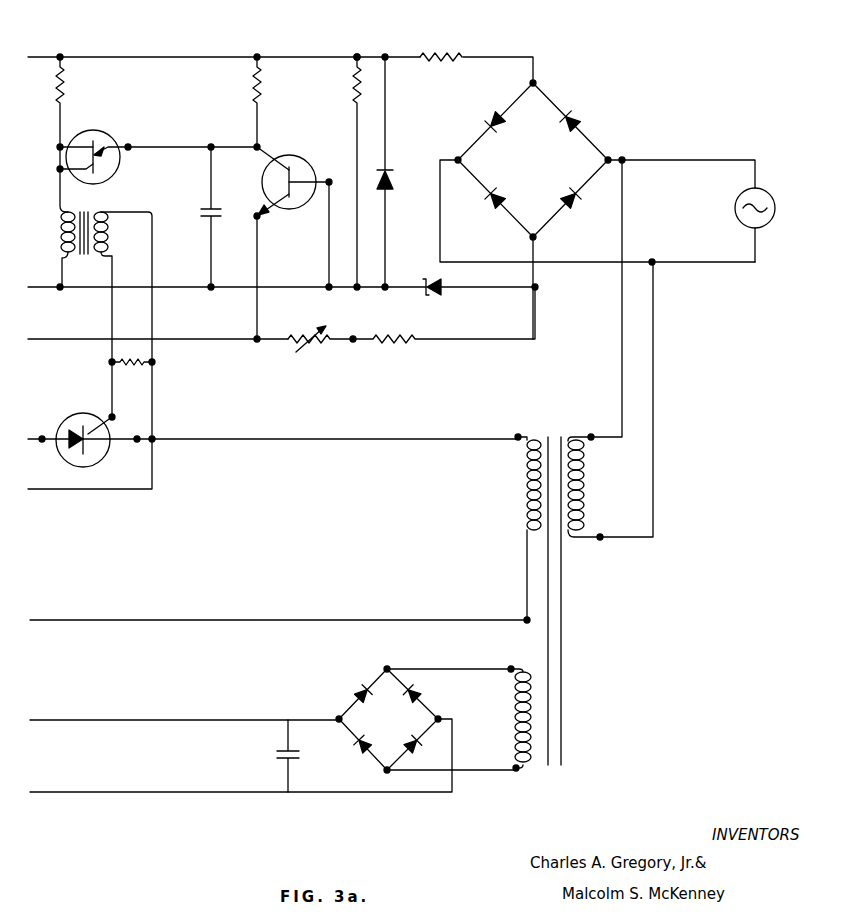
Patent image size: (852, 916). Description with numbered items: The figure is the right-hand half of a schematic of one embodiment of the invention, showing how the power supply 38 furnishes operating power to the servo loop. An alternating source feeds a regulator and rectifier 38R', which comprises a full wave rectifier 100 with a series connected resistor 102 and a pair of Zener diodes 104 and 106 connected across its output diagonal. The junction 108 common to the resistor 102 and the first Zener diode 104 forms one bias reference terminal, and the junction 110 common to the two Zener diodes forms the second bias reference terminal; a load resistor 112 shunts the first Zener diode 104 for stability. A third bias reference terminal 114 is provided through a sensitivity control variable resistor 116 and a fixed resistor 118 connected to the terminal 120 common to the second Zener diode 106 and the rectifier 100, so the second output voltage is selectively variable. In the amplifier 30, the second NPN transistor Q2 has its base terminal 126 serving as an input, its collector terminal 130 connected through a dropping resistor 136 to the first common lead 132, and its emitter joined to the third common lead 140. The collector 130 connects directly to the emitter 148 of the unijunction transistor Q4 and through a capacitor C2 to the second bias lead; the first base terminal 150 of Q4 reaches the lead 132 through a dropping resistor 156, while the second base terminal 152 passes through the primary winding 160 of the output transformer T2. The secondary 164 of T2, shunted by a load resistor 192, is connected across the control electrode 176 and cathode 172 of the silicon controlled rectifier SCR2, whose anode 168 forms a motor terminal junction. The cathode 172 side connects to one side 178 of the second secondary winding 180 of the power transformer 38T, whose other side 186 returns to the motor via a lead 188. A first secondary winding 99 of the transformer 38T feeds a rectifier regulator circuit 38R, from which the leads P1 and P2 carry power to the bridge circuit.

The first common lead 132 is at (42, 57).
The amplifier 30 is at (122, 50).
The dropping resistor 156 is at (64, 82).
The first base terminal 150 is at (59, 147).
The second base terminal 152 is at (59, 171).
The emitter 148 is at (131, 147).
The second unijunction transistor Q4 is at (94, 131).
The second output transformer T2 is at (120, 265).
The primary winding 160 is at (68, 265).
The secondary winding 164 is at (108, 243).
The capacitor C2 is at (222, 222).
The dropping resistor 136 is at (253, 88).
The collector terminal 130 is at (255, 144).
The second NPN transistor Q2 is at (308, 210).
The base terminal 126 is at (330, 179).
The junction 108 is at (358, 55).
The load resistor 112 is at (352, 90).
The series connected resistor 102 is at (452, 55).
The first Zener diode 104 is at (393, 184).
The regulator and rectifier 38R' is at (597, 171).
The full wave rectifier 100 is at (546, 163).
The power supply 38 is at (756, 188).
The junction 110 is at (389, 286).
The second Zener diode 106 is at (432, 292).
The terminal 120 is at (538, 288).
The third common lead 140 is at (90, 341).
The third bias reference terminal 114 is at (255, 342).
The sensitivity control variable resistor 116 is at (333, 345).
The fixed resistor 118 is at (412, 343).
The load resistor 192 is at (150, 368).
The control electrode 176 is at (115, 417).
The cathode electrode 172 is at (154, 442).
The anode electrode 168 is at (43, 436).
The second silicon controlled rectifier SCR2 is at (94, 450).
The power transformer 38T is at (547, 465).
The one side of second secondary winding 178 is at (516, 441).
The second secondary winding 180 is at (526, 489).
The other side of second secondary winding 186 is at (525, 616).
The lead 188 is at (300, 618).
The lead P2 is at (128, 719).
The lead P1 is at (182, 790).
The rectifier regulator circuit 38R is at (375, 719).
The first secondary winding 99 is at (511, 699).